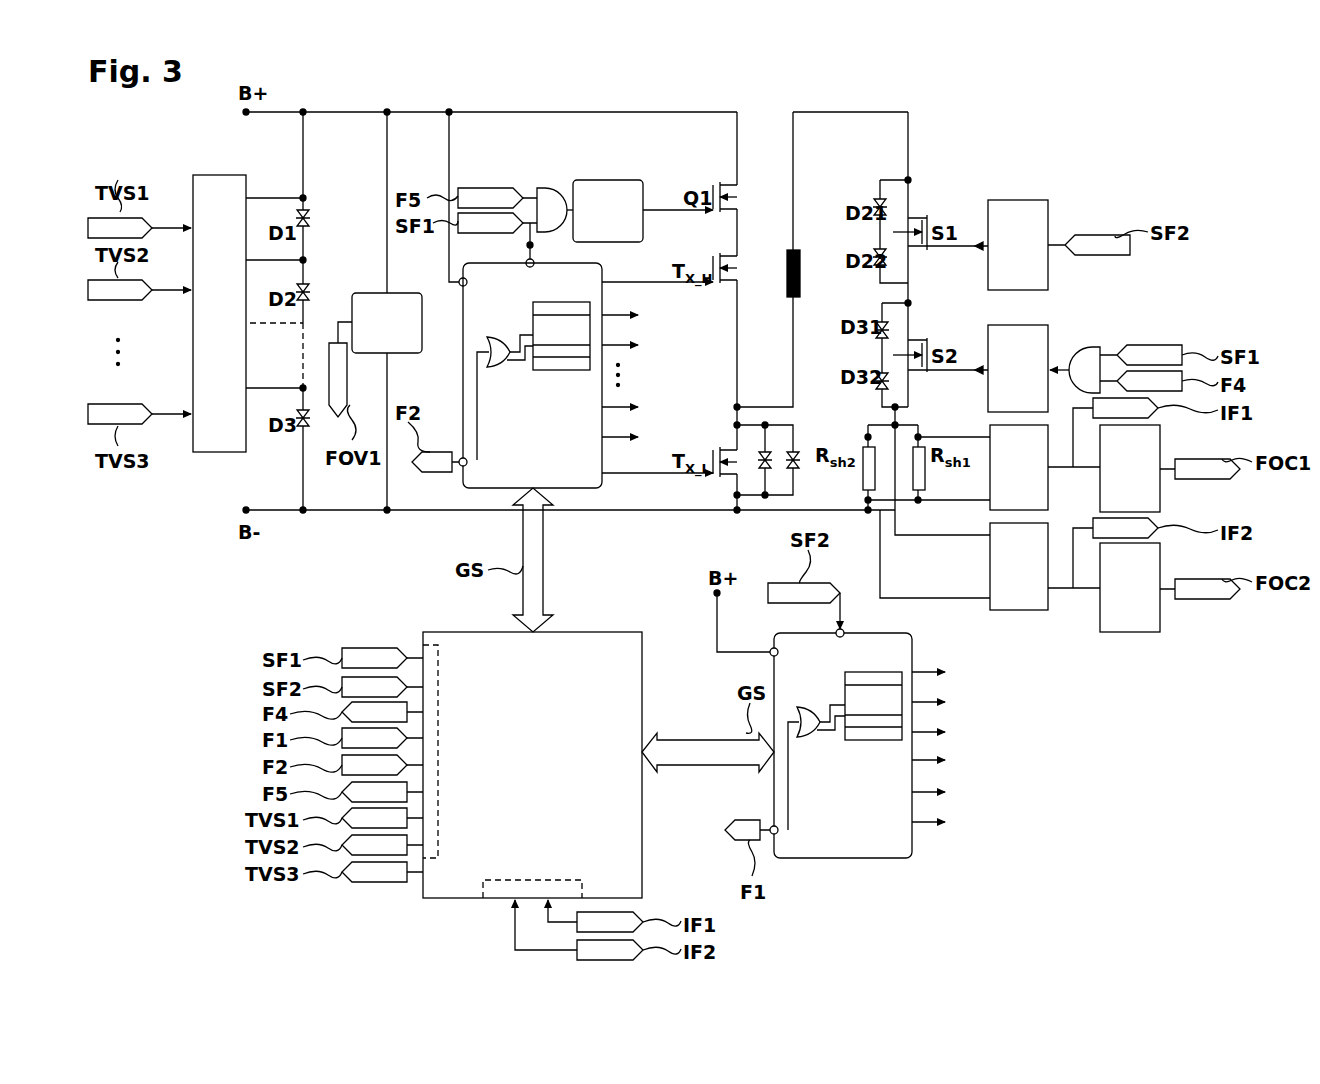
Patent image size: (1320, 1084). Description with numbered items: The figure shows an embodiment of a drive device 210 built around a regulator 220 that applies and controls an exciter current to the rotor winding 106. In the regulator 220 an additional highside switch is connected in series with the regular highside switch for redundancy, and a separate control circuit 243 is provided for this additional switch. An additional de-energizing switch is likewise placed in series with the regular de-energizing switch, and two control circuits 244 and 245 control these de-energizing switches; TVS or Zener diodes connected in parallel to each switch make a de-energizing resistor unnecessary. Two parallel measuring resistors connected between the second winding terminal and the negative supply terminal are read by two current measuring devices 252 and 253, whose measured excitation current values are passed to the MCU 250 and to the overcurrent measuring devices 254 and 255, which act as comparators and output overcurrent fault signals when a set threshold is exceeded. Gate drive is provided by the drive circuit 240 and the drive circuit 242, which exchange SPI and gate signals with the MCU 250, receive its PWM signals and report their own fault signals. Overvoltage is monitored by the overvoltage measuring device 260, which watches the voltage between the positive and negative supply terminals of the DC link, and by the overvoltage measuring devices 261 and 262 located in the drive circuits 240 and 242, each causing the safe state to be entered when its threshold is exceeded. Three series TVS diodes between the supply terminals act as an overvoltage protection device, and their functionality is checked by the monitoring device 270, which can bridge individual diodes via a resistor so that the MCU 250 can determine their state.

The drive device 210 is at (410, 92).
The regulator 220 is at (682, 528).
The monitoring device 270 is at (220, 175).
The overvoltage measuring device 260 is at (358, 293).
The control circuit 243 is at (604, 180).
The drive circuit 240 is at (463, 378).
The overvoltage measuring device 261 is at (590, 304).
The rotor winding 106 is at (808, 262).
The control circuit 245 is at (1048, 222).
The control circuit 244 is at (1048, 345).
The current measuring device 252 is at (990, 430).
The current measuring device 253 is at (990, 567).
The overcurrent measuring device 254 is at (1160, 447).
The overcurrent measuring device 255 is at (1160, 568).
The MCU 250 is at (642, 870).
The drive circuit 242 is at (838, 858).
The overvoltage measuring device 262 is at (885, 672).